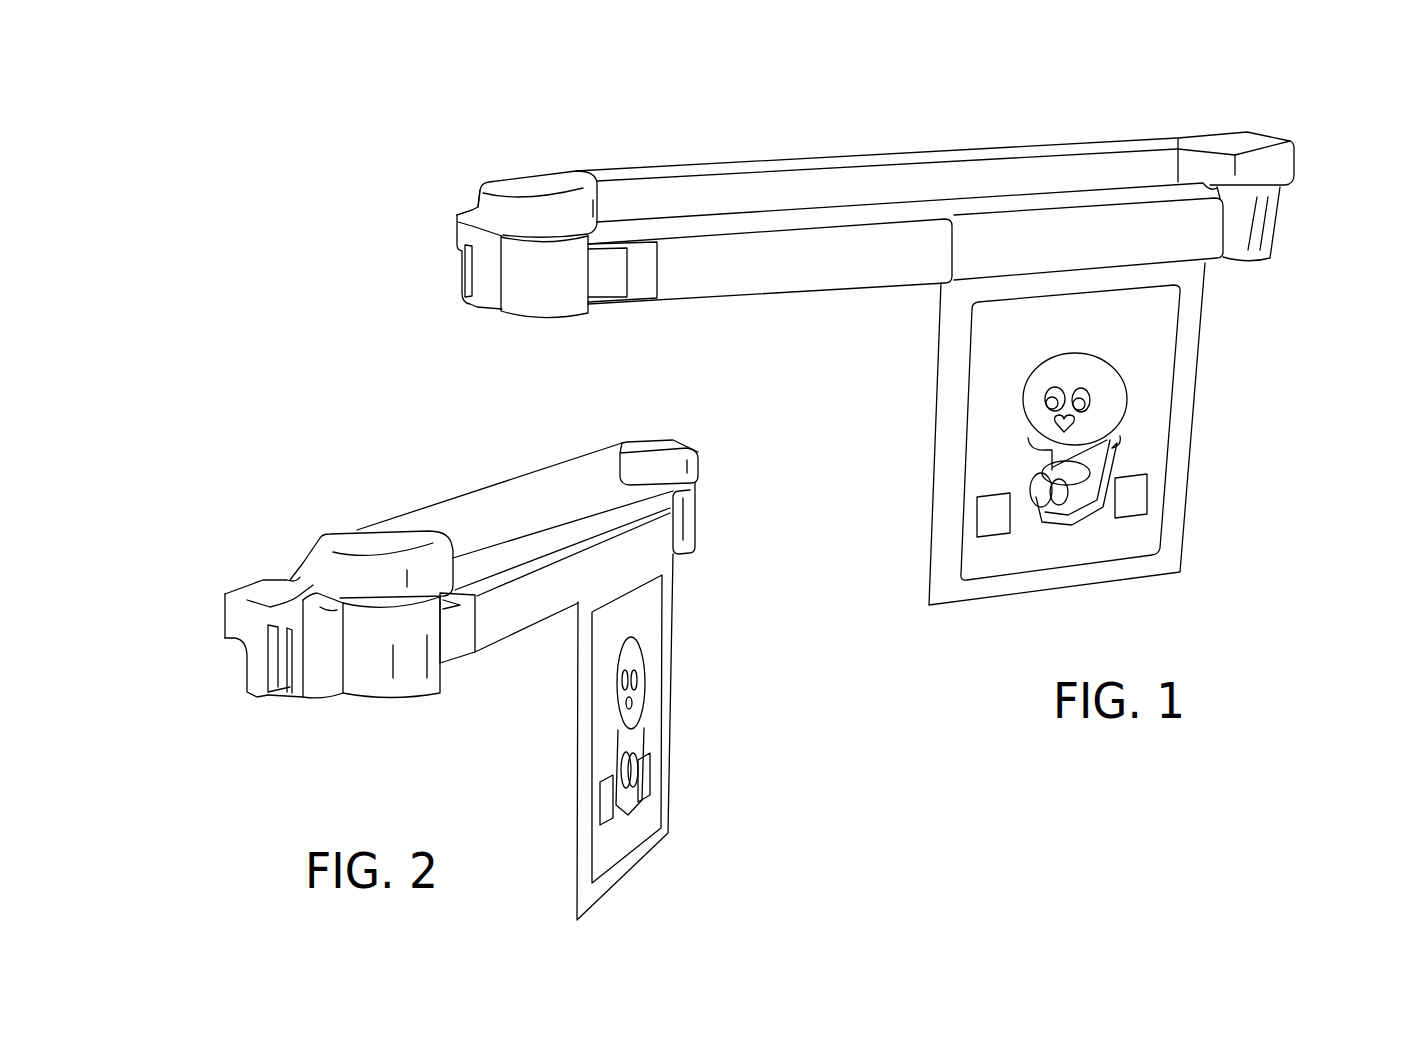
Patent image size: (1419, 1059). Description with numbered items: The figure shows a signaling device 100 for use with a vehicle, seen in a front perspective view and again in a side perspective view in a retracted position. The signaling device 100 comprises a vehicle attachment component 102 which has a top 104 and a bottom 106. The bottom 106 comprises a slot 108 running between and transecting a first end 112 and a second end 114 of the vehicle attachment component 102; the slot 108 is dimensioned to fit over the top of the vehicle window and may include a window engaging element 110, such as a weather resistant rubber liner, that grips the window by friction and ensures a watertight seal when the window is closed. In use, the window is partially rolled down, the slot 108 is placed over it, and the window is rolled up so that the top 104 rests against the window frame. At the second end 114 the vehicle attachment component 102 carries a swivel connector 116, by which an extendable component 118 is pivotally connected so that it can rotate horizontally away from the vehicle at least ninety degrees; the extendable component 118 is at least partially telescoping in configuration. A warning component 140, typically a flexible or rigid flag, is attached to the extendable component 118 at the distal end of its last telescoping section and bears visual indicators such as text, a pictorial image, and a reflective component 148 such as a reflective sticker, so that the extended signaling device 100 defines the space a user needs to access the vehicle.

In FIG. 1, the signaling device 100 is at (1108, 83).
In FIG. 2, the signaling device 100 is at (288, 478).
In FIG. 1, the vehicle attachment component 102 is at (460, 207).
In FIG. 2, the vehicle attachment component 102 is at (245, 577).
In FIG. 1, the top 104 is at (542, 170).
In FIG. 2, the top 104 is at (337, 536).
In FIG. 2, the bottom 106 is at (258, 698).
In FIG. 1, the slot 108 is at (460, 273).
In FIG. 2, the slot 108 is at (280, 695).
In FIG. 2, the window engaging element 110 is at (290, 663).
In FIG. 1, the first end 112 is at (458, 230).
In FIG. 1, the second end 114 is at (1297, 163).
In FIG. 1, the swivel connector 116 is at (1282, 188).
In FIG. 1, the extendable component 118 is at (728, 313).
In FIG. 2, the extendable component 118 is at (472, 662).
In FIG. 1, the warning component 140 is at (1099, 434).
In FIG. 2, the warning component 140 is at (675, 792).
In FIG. 1, the reflective component 148 is at (977, 512).